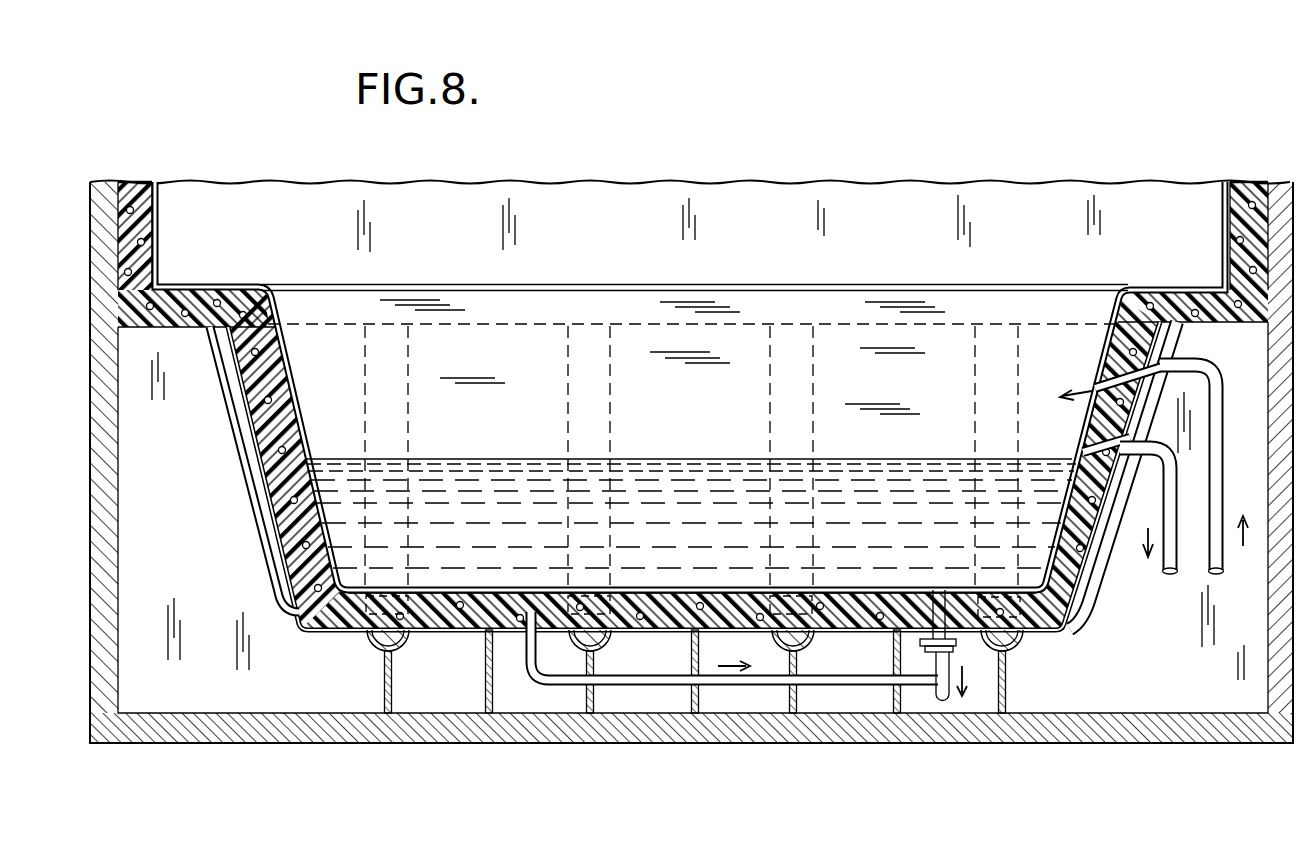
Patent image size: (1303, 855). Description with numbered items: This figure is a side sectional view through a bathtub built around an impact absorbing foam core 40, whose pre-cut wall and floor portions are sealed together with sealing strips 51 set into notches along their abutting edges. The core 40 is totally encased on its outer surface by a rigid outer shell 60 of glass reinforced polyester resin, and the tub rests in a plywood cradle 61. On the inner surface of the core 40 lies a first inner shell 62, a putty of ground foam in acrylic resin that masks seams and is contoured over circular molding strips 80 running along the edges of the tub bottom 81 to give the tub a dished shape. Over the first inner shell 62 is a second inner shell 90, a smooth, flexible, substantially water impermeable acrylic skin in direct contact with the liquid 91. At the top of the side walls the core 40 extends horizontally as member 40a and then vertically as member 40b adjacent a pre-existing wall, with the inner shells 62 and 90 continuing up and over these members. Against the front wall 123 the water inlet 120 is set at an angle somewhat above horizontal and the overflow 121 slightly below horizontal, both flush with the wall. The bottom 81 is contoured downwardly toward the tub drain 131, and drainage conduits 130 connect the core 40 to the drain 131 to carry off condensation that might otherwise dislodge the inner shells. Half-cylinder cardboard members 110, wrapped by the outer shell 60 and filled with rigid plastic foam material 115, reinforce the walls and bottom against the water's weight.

The core 40 is at (492, 590).
The horizontal foam member 40a is at (198, 302).
The vertical foam member 40b is at (140, 214).
The sealing strip 51 is at (332, 630).
The rigid outer shell 60 is at (378, 641).
The plywood cradle 61 is at (384, 689).
The first inner shell 62 is at (1244, 185).
The circular molding strip 80 is at (352, 590).
The tub bottom 81 is at (668, 590).
The second inner shell 90 is at (1226, 200).
The liquid 91 is at (695, 460).
The cardboard member 110 is at (576, 340).
The rigid plastic foam material 115 is at (403, 637).
The water inlet 120 is at (1222, 376).
The overflow 121 is at (1167, 460).
The front wall 123 is at (1106, 351).
The drainage conduit 130 is at (529, 677).
The tub drain 131 is at (934, 690).